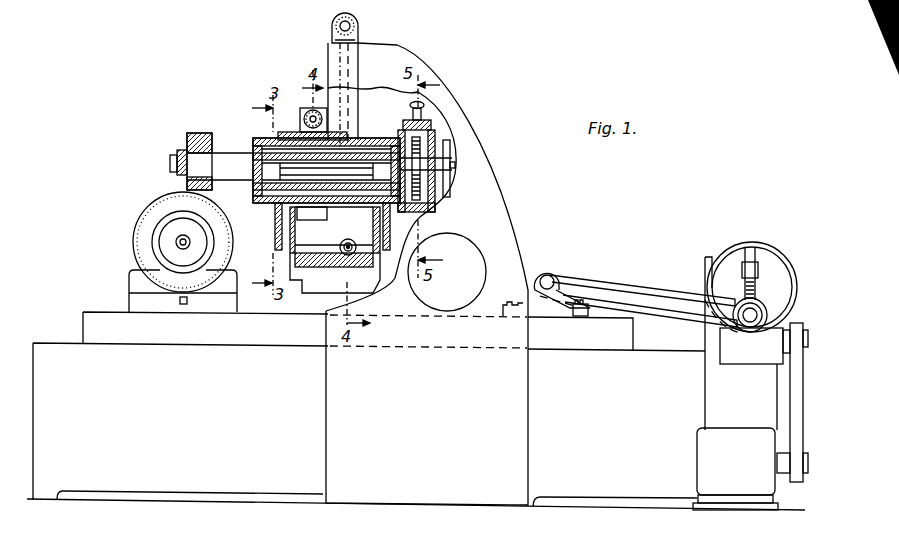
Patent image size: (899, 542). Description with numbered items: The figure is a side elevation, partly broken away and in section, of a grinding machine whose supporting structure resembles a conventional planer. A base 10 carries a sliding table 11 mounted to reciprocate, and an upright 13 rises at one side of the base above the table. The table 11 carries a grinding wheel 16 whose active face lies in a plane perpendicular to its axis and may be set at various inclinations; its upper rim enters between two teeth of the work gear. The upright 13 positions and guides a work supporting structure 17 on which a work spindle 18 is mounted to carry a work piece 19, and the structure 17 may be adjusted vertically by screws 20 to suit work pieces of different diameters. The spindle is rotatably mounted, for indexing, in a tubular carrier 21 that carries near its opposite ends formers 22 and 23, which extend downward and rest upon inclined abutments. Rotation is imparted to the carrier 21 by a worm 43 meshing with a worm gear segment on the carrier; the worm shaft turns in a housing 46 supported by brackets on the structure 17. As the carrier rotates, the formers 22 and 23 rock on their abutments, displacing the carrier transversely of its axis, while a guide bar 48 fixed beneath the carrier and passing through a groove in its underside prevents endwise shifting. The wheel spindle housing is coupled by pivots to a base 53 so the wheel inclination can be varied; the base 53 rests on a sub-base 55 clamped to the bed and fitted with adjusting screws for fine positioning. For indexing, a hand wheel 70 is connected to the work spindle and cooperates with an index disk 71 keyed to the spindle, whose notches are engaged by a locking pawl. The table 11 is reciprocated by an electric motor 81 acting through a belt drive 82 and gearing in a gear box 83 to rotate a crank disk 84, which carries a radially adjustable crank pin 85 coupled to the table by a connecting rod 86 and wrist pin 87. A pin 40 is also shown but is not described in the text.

The base 10 is at (56, 351).
The sliding table 11 is at (88, 311).
The upright 13 is at (516, 198).
The grinding wheel 16 is at (162, 203).
The work supporting structure 17 is at (283, 236).
The work spindle 18 is at (228, 157).
The work piece 19 is at (200, 133).
The screws 20 is at (350, 81).
The tubular carrier 21 is at (365, 148).
The former 22 is at (275, 215).
The former 23 is at (403, 133).
The pin 40 is at (350, 239).
The worm 43 is at (303, 130).
The housing 46 is at (310, 114).
The guide bar 48 is at (330, 228).
The base 53 is at (141, 279).
The sub-base 55 is at (203, 303).
The hand wheel 70 is at (450, 150).
The index disk 71 is at (430, 135).
The electric motor 81 is at (703, 452).
The belt drive 82 is at (792, 397).
The gear box 83 is at (737, 355).
The crank disk 84 is at (762, 250).
The crank pin 85 is at (753, 312).
The connecting rod 86 is at (650, 284).
The wrist pin 87 is at (552, 274).